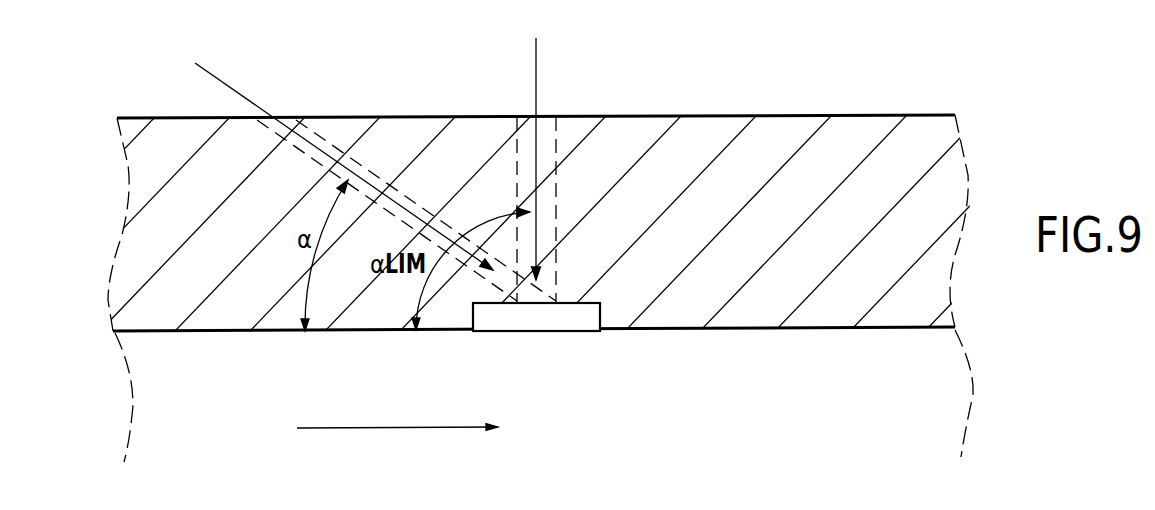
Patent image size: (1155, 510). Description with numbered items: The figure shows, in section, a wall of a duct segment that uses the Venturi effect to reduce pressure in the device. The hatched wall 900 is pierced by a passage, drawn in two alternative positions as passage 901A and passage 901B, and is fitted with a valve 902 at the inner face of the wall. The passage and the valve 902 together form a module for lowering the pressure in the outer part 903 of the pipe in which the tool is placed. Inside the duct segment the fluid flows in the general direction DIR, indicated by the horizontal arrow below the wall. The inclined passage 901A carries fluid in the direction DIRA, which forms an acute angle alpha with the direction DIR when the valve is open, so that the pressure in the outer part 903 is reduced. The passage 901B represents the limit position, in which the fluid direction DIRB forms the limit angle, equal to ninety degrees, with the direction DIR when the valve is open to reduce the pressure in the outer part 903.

The substrate / workpiece 900 is at (813, 127).
The passage 901A is at (333, 143).
The passage 901B is at (558, 153).
The valve 902 is at (563, 320).
The outer part of the pipe 903 is at (465, 57).
The general direction of the fluid in the passage DIRA is at (243, 93).
The general direction of the fluid in the passage DIRB is at (535, 78).
The general direction of the fluid in the duct segment DIR is at (370, 427).